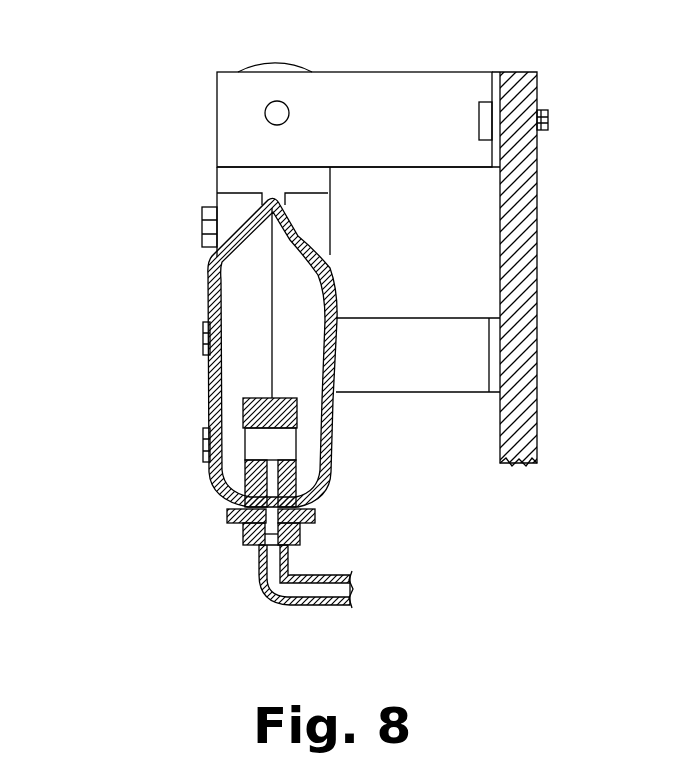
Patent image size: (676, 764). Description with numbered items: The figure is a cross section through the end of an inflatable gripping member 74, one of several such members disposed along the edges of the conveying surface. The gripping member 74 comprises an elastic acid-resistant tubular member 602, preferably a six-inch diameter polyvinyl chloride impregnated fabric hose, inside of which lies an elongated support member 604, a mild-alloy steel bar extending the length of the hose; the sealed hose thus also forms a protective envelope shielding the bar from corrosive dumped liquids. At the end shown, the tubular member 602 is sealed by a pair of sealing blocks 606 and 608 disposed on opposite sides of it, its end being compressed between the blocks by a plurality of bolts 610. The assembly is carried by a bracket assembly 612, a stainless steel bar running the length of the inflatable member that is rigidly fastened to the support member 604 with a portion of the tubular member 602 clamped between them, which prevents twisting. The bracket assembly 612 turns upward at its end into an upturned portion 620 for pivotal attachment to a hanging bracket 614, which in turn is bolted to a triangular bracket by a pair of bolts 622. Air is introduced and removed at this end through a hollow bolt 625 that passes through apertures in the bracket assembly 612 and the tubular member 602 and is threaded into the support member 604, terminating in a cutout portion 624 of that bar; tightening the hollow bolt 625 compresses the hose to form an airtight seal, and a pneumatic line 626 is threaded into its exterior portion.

The hanging bracket 614 is at (370, 84).
The bolts 622 is at (549, 118).
The upturned portion 620 is at (222, 178).
The sealing block 606 is at (218, 197).
The sealing block 608 is at (320, 208).
The elastic acid-resistant tubular member 602 is at (207, 283).
The bolts 610 is at (202, 224).
The elongated support member 604 is at (285, 407).
The cutout portion 624 is at (285, 443).
The bracket assembly 612 is at (227, 515).
The hollow bolt 625 is at (300, 533).
The pneumatic line 626 is at (260, 567).
The inflatable gripping member 74 is at (152, 386).